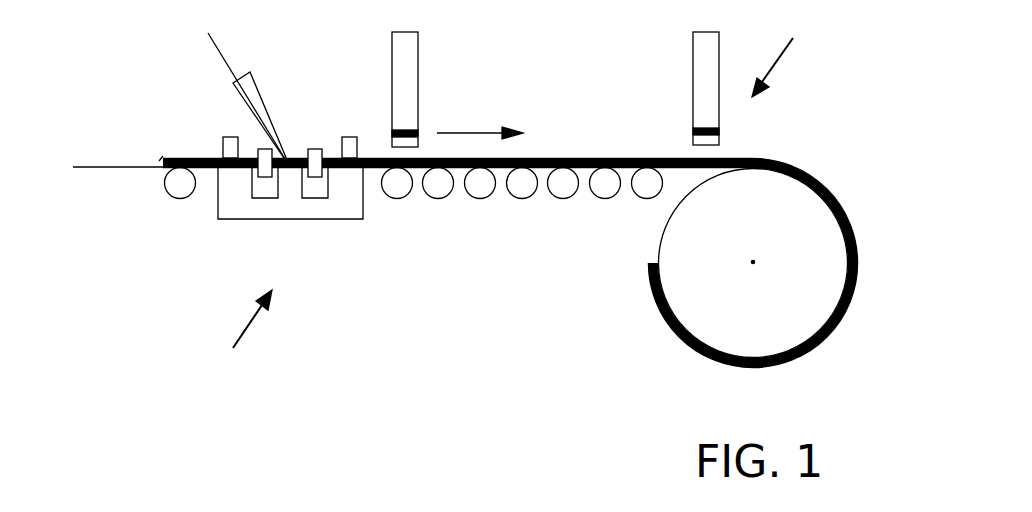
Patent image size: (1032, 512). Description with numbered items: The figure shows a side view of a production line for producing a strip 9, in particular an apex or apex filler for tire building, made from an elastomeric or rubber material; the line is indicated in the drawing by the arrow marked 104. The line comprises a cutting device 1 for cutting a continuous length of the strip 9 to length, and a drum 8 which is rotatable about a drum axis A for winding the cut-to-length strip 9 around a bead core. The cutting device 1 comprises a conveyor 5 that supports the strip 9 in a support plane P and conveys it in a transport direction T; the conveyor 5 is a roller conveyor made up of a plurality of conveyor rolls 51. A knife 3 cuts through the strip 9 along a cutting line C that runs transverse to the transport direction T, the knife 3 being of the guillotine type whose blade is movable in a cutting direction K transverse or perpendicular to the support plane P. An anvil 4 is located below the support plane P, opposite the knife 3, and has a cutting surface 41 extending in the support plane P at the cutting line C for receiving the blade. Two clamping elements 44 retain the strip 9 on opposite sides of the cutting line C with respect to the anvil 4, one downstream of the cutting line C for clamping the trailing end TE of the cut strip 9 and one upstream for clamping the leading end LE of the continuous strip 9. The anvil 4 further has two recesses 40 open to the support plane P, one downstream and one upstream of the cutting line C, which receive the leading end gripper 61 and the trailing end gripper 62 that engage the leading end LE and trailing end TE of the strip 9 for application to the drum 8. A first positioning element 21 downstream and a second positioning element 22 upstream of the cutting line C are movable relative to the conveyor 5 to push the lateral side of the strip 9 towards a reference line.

The cutting device 1 is at (248, 334).
The knife 3 is at (247, 90).
The anvil 4 is at (343, 210).
The conveyor 5 is at (479, 190).
The drum 8 is at (675, 245).
The strip 9 is at (647, 175).
The first positioning element 21 is at (316, 149).
The second positioning element 22 is at (261, 149).
The recesses 40 is at (250, 185).
The cutting surface 41 is at (310, 200).
The clamping elements 44 is at (227, 145).
The conveyor rolls 51 is at (562, 178).
The leading end gripper 61 is at (705, 62).
The trailing end gripper 62 is at (407, 67).
The apparatus 104 is at (791, 54).
The cutting direction K is at (223, 53).
The trailing end TE is at (296, 158).
The leading end LE is at (648, 285).
The cutting line C is at (291, 170).
The support plane P is at (82, 167).
The transport direction T is at (480, 117).
The drum axis A is at (753, 277).